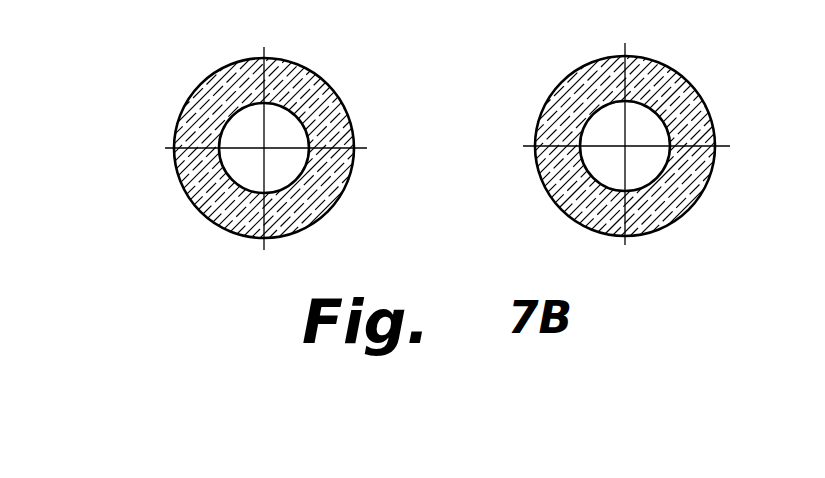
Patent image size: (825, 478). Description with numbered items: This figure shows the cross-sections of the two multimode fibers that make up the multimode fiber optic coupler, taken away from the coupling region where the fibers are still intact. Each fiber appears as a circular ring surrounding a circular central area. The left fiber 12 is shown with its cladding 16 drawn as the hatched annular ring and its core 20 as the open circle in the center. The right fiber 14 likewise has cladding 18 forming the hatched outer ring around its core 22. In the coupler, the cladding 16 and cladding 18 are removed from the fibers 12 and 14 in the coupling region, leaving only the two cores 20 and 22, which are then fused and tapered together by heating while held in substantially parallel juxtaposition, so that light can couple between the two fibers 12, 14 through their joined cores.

The multimode fiber 12 is at (198, 200).
The multimode fiber 14 is at (703, 187).
The cladding 16 is at (218, 93).
The cladding 18 is at (668, 88).
The core 20 is at (245, 133).
The core 22 is at (647, 130).